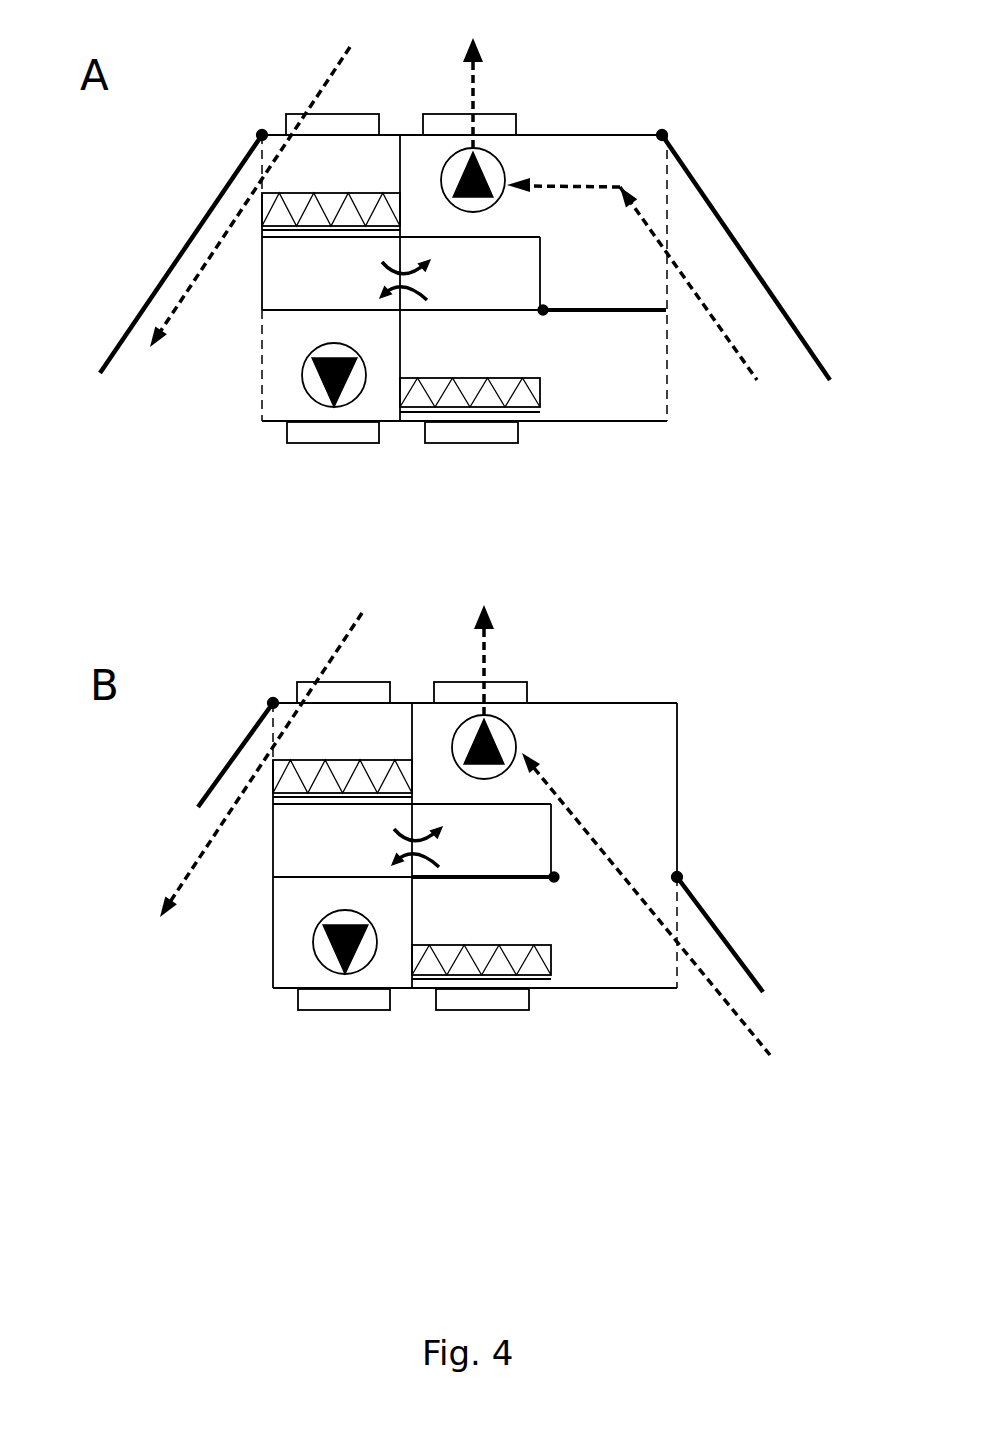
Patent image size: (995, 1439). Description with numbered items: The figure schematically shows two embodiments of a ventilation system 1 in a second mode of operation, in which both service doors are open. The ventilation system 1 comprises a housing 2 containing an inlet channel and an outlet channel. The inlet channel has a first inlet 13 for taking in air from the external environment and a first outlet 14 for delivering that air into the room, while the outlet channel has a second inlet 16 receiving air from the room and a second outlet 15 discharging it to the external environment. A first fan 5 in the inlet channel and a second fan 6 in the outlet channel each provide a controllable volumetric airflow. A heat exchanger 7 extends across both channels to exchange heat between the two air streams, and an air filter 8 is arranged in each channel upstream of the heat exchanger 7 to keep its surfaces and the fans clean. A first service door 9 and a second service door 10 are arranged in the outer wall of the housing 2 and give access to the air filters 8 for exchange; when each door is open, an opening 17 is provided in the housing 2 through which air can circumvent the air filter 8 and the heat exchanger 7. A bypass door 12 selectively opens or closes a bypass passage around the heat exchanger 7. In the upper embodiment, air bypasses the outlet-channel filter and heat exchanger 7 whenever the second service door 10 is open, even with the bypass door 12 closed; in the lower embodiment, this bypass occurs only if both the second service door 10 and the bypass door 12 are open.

The ventilation system 1 is at (685, 72).
The housing 2 is at (635, 435).
The first fan 5 is at (308, 390).
The second fan 6 is at (485, 173).
The heat exchanger 7 is at (330, 277).
The air filter 8 is at (273, 213).
The first service door 9 is at (183, 253).
The second service door 10 is at (750, 262).
The bypass door 12 is at (647, 316).
The first inlet 13 is at (340, 123).
The first outlet 14 is at (313, 432).
The second outlet 15 is at (492, 127).
The second inlet 16 is at (498, 432).
The opening 17 is at (259, 134).